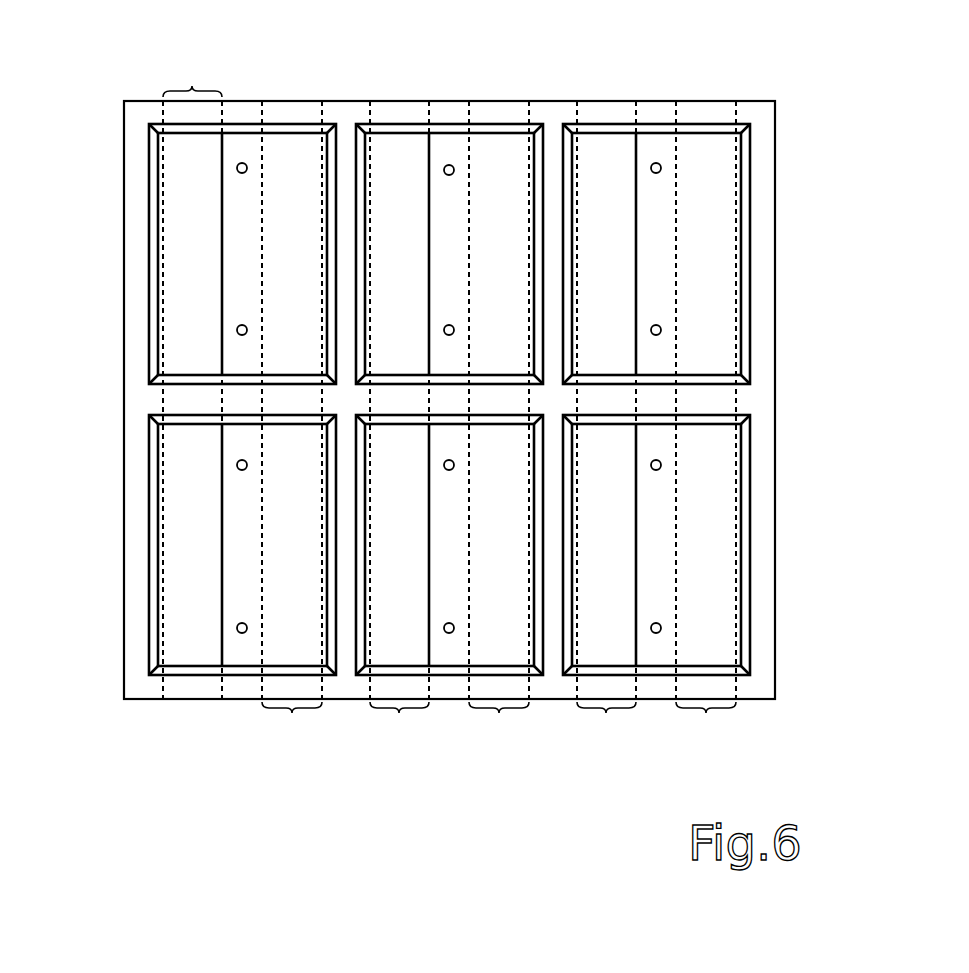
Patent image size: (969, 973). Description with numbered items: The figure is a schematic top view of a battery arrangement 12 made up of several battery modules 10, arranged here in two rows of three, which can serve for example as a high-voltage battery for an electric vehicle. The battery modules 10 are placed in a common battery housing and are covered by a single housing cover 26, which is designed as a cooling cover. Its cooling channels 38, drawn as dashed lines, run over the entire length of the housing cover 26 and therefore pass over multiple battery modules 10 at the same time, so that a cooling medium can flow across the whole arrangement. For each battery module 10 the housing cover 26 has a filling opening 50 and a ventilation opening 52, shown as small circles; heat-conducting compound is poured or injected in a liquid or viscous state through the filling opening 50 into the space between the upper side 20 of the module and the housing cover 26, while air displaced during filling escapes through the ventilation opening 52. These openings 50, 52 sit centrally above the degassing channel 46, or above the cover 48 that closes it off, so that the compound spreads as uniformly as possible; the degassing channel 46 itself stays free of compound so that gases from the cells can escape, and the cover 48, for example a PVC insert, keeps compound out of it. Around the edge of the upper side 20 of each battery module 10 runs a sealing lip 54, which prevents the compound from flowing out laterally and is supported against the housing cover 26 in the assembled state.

The battery module 10 is at (328, 128).
The battery arrangement 12 is at (142, 98).
The upper side 20 is at (496, 152).
The housing cover 26 is at (286, 99).
The cooling channels 38 is at (449, 401).
The degassing channel 46 is at (428, 394).
The cover 48 is at (240, 128).
The filling opening 50 is at (446, 426).
The ventilation opening 52 is at (237, 168).
The sealing lip 54 is at (385, 128).